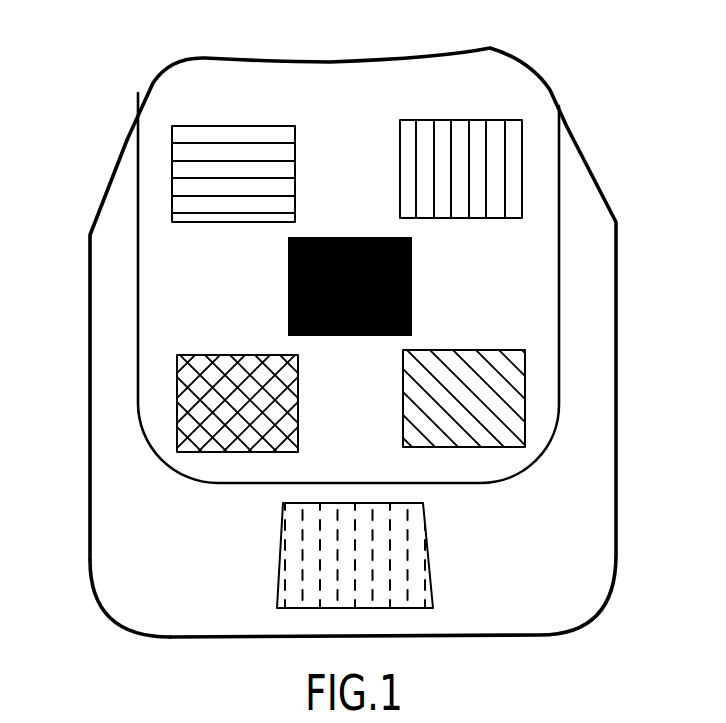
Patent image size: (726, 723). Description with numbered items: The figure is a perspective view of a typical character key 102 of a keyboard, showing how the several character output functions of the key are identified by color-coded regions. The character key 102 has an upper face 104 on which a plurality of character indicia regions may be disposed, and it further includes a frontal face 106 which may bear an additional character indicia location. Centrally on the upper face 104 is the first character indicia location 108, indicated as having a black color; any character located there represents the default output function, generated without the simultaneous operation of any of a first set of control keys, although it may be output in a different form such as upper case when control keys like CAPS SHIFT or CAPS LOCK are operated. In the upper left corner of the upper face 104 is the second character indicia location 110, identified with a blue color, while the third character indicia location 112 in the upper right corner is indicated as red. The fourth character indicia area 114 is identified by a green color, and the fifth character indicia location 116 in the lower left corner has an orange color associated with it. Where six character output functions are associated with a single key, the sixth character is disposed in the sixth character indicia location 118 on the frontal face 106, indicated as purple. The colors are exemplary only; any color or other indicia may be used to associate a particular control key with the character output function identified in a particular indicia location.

The character key 102 is at (88, 530).
The upper face 104 is at (352, 90).
The frontal face 106 is at (147, 608).
The first character indicia location 108 is at (348, 236).
The second character indicia location 110 is at (238, 125).
The third character indicia location 112 is at (523, 163).
The fourth character indicia area 114 is at (527, 437).
The fifth character indicia location 116 is at (176, 402).
The sixth character indicia location 118 is at (430, 588).